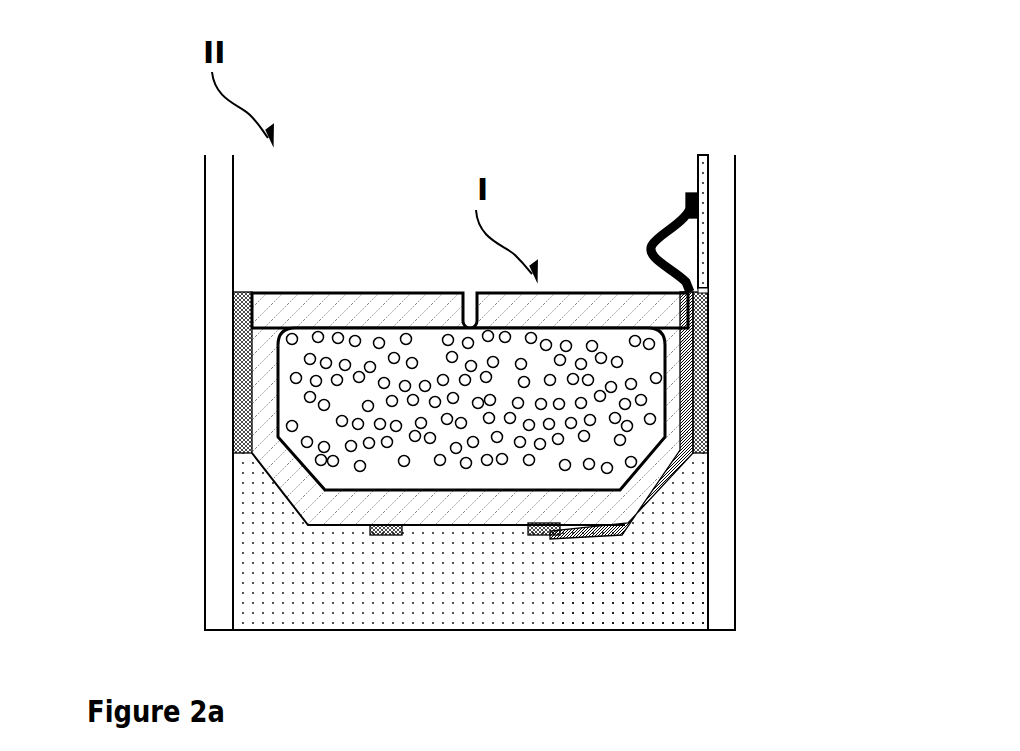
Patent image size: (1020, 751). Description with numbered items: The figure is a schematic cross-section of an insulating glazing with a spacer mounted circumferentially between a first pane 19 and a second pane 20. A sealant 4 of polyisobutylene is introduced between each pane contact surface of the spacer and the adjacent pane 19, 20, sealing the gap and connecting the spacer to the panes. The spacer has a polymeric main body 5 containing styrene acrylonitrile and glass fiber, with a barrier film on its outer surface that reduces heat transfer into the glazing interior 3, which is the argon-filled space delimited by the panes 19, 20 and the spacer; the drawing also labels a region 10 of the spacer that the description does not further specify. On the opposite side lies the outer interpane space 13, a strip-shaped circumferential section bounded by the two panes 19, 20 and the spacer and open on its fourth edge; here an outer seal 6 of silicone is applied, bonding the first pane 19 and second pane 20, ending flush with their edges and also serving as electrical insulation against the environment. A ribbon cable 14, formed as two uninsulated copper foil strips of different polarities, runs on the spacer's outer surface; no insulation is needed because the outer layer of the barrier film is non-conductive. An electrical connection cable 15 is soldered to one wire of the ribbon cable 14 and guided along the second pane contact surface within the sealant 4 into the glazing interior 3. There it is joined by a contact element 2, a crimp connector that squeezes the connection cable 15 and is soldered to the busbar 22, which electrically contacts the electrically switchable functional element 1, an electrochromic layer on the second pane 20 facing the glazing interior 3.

The electrically switchable functional element 1 is at (708, 175).
The contact element 2 is at (680, 210).
The glazing interior 3 is at (290, 210).
The sealant 4 is at (240, 313).
The polymeric main body 5 is at (262, 398).
The outer seal 6 is at (668, 608).
The inner container with particles 10 is at (285, 368).
The outer interpane space 13 is at (265, 558).
The ribbon cable 14 is at (540, 535).
The electrical connection cable 15 is at (700, 273).
The first pane 19 is at (225, 495).
The second pane 20 is at (717, 562).
The busbar 22 is at (700, 213).